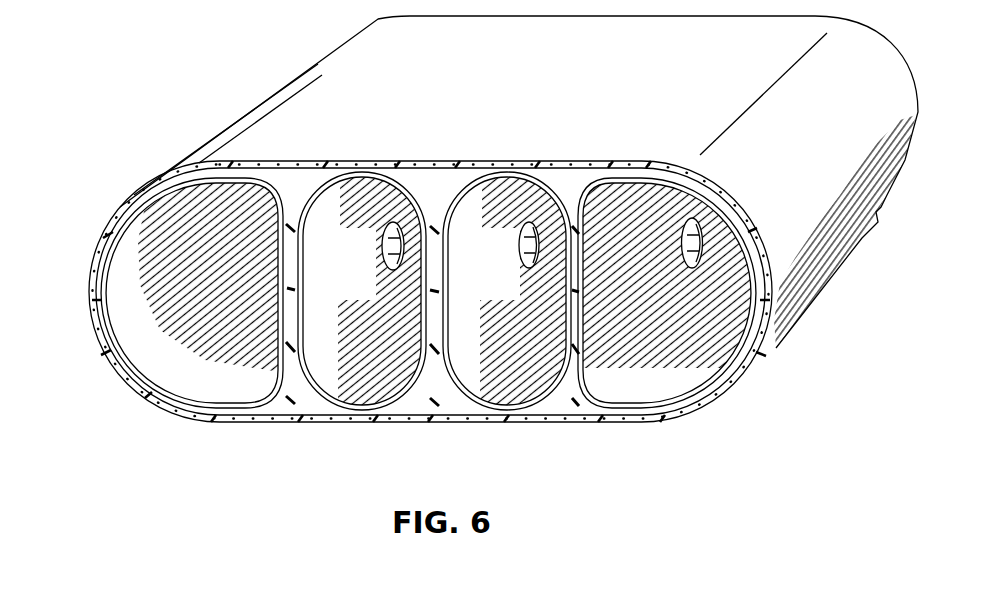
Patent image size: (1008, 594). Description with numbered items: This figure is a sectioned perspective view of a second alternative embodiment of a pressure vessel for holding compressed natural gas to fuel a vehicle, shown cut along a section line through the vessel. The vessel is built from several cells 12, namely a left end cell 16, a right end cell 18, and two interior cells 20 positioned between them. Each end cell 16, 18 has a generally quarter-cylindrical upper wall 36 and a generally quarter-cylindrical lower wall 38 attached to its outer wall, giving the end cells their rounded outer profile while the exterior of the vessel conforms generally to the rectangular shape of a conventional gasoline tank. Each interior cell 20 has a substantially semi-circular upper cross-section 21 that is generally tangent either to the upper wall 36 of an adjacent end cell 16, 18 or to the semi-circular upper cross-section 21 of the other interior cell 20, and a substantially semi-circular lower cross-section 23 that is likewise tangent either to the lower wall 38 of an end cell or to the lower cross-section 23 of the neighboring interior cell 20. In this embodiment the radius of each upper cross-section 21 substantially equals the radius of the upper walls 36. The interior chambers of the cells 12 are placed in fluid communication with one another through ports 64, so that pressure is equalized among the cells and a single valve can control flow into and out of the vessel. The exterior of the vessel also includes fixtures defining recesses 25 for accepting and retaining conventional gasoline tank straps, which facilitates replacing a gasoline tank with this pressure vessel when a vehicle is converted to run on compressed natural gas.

The cells 12 is at (205, 418).
The left end cell 16 is at (97, 285).
The right end cell 18 is at (757, 348).
The interior cell 20 is at (400, 157).
The semi-circular upper cross-section 21 is at (332, 197).
The semi-circular lower cross-section 23 is at (385, 397).
The recesses 25 is at (868, 232).
The upper wall 36 is at (265, 192).
The lower wall 38 is at (253, 400).
The ports 64 is at (395, 268).